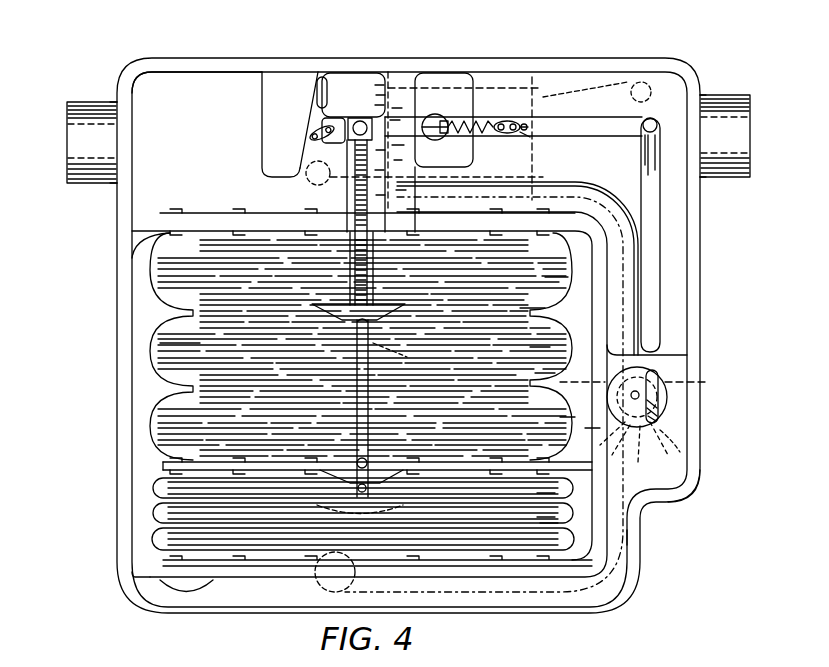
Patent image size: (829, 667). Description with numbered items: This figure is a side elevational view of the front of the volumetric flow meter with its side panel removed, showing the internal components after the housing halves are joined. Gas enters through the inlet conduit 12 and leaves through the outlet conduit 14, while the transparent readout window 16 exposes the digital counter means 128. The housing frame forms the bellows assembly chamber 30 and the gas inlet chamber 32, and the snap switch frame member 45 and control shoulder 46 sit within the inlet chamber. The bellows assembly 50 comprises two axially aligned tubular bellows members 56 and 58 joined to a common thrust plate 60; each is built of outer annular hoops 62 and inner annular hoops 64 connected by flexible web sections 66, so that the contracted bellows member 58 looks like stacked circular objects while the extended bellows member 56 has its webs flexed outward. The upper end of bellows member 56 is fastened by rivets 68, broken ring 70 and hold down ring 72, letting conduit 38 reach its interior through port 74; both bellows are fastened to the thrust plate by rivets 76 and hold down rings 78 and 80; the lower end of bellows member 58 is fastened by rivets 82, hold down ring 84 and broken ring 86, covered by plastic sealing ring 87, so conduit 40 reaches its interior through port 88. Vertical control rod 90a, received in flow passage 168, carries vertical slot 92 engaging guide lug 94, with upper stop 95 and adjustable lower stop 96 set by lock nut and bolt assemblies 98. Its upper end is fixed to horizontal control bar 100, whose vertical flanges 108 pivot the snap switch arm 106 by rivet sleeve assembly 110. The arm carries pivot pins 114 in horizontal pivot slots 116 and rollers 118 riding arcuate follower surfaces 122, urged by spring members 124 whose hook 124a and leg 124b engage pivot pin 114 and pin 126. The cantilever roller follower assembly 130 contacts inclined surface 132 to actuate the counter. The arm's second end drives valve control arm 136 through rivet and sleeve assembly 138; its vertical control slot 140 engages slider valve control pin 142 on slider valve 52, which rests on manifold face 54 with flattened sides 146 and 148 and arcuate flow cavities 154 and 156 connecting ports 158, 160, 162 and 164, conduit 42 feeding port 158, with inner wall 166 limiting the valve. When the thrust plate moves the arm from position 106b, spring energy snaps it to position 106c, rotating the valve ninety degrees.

The inlet conduit 12 is at (87, 101).
The outlet conduit 14 is at (732, 95).
The transparent readout window 16 is at (383, 72).
The bellows assembly chamber 30 is at (144, 309).
The gas inlet chamber 32 is at (170, 95).
The conduit 38 is at (606, 309).
The conduit 40 is at (641, 549).
The conduit 42 is at (610, 396).
The snap switch frame member 45 is at (478, 108).
The control shoulder 46 is at (277, 108).
The bellows assembly 50 is at (155, 371).
The slider valve 52 is at (668, 399).
The manifold face 54 is at (675, 437).
The bellows member 56 is at (157, 347).
The bellows member 58 is at (155, 516).
The thrust plate 60 is at (197, 462).
The outer annular convex semicylindrical hoops 62 is at (543, 347).
The inner annular concave semicylindrical hoops 64 is at (530, 309).
The web sections 66 is at (543, 328).
The rivets 68 is at (240, 209).
The broken ring 70 is at (193, 212).
The hold down ring 72 is at (140, 245).
The port 74 is at (374, 253).
The rivets 76 is at (244, 460).
The hold down ring 78 is at (167, 463).
The hold down ring 80 is at (155, 483).
The rivets 82 is at (247, 560).
The hold down ring 84 is at (167, 559).
The broken ring 86 is at (160, 592).
The plastic sealing ring 87 is at (172, 612).
The port 88 is at (335, 559).
The vertical control rod 90a is at (374, 289).
The vertical slot 92 is at (355, 395).
The guide lug 94 is at (366, 461).
The stop 95 is at (332, 306).
The stop 96 is at (380, 478).
The lock nut and bolt assemblies 98 is at (352, 487).
The horizontal control bar 100 is at (349, 119).
The snap switch arm 106 is at (607, 137).
The snap switch arm position 106b is at (308, 128).
The snap switch arm position 106c is at (310, 182).
The vertical flanges 108 is at (362, 118).
The rivet sleeve assembly 110 is at (366, 118).
The pivot pins 114 is at (503, 134).
The horizontal pivot slots 116 is at (528, 133).
The rollers 118 is at (438, 178).
The arcuate follower surfaces 122 is at (422, 100).
The spring members 124 is at (498, 121).
The hook 124a is at (520, 121).
The leg 124b is at (470, 109).
The pin 126 is at (432, 116).
The digital counter means 128 is at (327, 76).
The cantilever roller follower assembly 130 is at (307, 140).
The inclined surface 132 is at (318, 74).
The valve control arm 136 is at (663, 249).
The rivet and sleeve assembly 138 is at (651, 118).
The vertical control slot 140 is at (658, 387).
The slider valve control pin 142 is at (655, 425).
The flattened side 146 is at (637, 362).
The flattened side 148 is at (610, 407).
The arcuate flow cavity 154 is at (550, 373).
The arcuate flow cavity 156 is at (703, 483).
The port 158 is at (590, 428).
The port 160 is at (678, 368).
The valve port 162 is at (634, 451).
The valve port 164 is at (670, 410).
The inner wall 166 is at (560, 277).
The flow passage 168 is at (320, 234).